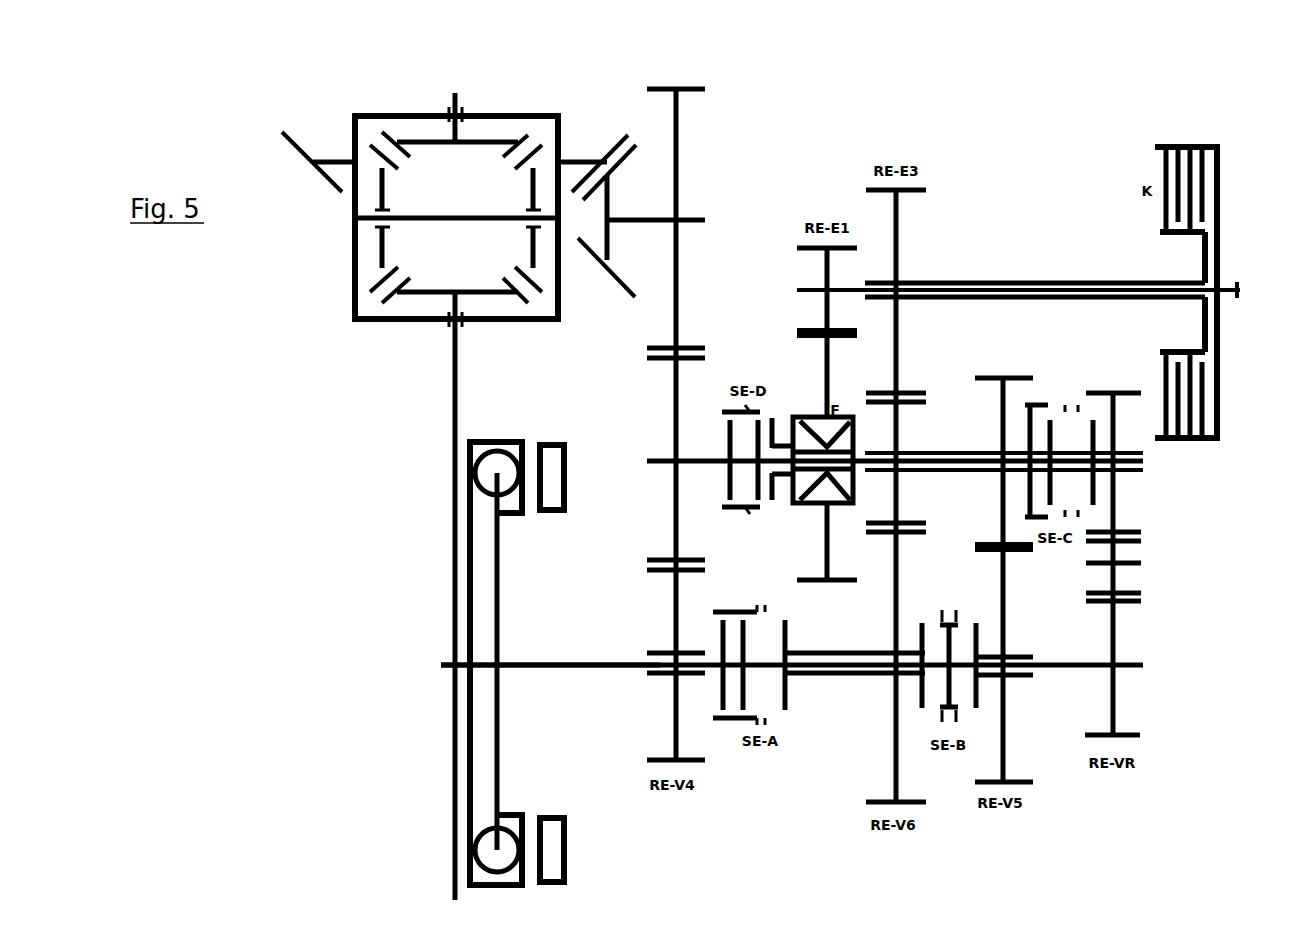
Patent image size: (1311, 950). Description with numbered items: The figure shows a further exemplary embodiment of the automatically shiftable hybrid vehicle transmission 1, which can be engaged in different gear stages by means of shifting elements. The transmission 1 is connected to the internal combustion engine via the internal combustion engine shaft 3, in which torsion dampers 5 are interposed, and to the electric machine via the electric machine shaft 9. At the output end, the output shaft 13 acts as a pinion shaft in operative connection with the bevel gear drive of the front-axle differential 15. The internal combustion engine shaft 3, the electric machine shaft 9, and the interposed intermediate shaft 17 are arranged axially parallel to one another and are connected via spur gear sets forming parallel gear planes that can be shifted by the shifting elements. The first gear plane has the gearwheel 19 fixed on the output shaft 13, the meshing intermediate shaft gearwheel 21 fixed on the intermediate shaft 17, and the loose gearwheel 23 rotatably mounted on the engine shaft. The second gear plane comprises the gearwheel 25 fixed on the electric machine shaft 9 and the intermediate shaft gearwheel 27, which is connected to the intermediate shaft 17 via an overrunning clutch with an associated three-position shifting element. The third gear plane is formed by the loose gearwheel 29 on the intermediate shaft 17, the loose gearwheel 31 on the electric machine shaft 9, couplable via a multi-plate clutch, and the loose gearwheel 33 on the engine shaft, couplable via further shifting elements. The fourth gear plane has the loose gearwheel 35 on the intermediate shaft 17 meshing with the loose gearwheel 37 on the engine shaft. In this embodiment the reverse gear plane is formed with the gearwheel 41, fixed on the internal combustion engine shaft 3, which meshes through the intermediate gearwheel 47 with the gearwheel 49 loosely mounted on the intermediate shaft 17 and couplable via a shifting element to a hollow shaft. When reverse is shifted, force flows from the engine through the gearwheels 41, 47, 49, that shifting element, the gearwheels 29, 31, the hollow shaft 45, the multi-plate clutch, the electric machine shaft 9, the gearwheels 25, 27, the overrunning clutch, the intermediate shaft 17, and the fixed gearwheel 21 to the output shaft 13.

The vehicle transmission 1 is at (1156, 853).
The internal combustion engine shaft 3 is at (551, 668).
The torsion dampers 5 is at (510, 885).
The electric machine shaft 9 is at (1228, 287).
The output shaft 13 is at (693, 215).
The front-axle differential 15 is at (485, 112).
The intermediate shaft 17 is at (660, 458).
The gearwheel 19 is at (687, 86).
The intermediate shaft gearwheel 21 is at (672, 378).
The loose gearwheel 23 is at (672, 600).
The gearwheel 25 is at (825, 272).
The intermediate shaft gearwheel 27 is at (825, 358).
The loose gearwheel 29 is at (898, 493).
The loose gearwheel 31 is at (898, 215).
The loose gearwheel 33 is at (893, 770).
The loose gearwheel 35 is at (1018, 378).
The loose gearwheel 37 is at (1008, 617).
The gearwheel 41 is at (1117, 697).
The hollow shaft 45 is at (1035, 283).
The intermediate gearwheel 47 is at (1118, 582).
The gearwheel 49 is at (1118, 497).